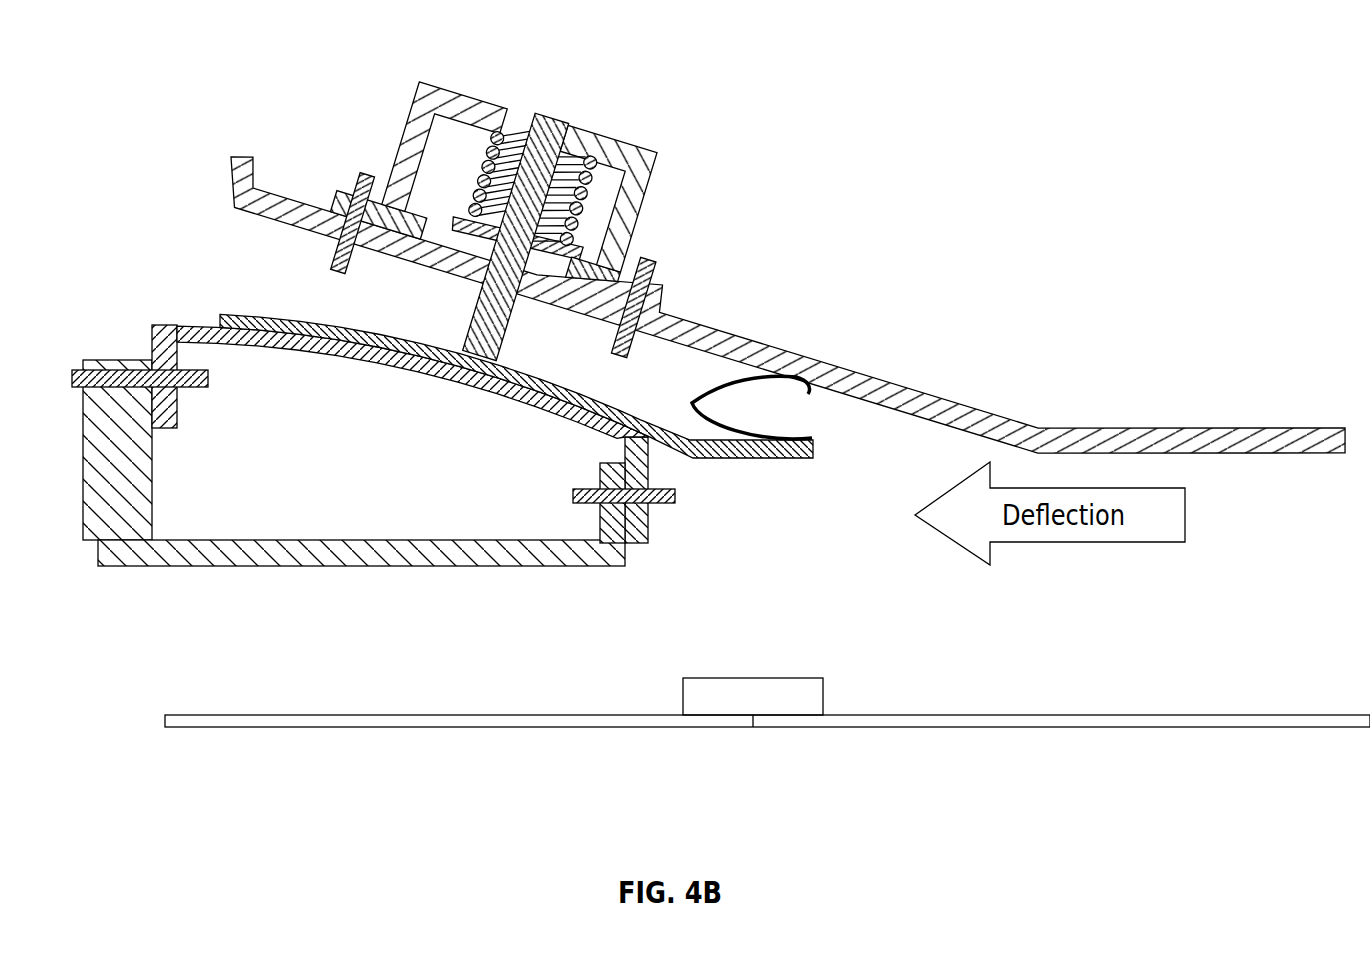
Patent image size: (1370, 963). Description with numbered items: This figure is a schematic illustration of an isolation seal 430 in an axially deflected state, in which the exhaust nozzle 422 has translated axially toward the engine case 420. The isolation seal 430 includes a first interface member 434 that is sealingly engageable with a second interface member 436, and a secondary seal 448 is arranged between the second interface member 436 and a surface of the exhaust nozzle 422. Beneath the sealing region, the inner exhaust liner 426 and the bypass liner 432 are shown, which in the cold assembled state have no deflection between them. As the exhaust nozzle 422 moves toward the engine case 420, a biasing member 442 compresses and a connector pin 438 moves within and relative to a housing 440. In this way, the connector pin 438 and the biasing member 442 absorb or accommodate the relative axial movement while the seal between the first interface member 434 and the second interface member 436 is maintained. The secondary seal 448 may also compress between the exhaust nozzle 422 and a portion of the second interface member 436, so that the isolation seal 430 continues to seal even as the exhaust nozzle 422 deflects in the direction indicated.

The engine case 420 is at (261, 566).
The exhaust nozzle 422 is at (1224, 425).
The inner exhaust liner 426 is at (1110, 727).
The isolation seal 430 is at (716, 103).
The bypass liner 432 is at (380, 727).
The first interface member 434 is at (315, 357).
The second interface member 436 is at (240, 313).
The connector pin 438 is at (549, 117).
The housing 440 is at (425, 83).
The biasing member 442 is at (637, 200).
The secondary seal 448 is at (712, 388).